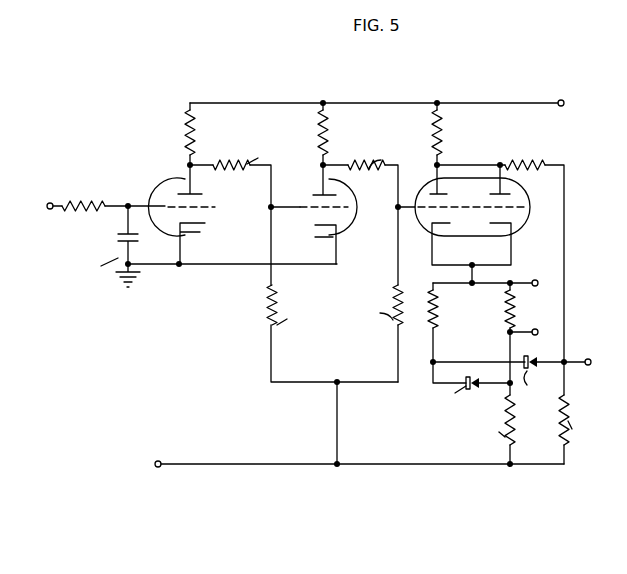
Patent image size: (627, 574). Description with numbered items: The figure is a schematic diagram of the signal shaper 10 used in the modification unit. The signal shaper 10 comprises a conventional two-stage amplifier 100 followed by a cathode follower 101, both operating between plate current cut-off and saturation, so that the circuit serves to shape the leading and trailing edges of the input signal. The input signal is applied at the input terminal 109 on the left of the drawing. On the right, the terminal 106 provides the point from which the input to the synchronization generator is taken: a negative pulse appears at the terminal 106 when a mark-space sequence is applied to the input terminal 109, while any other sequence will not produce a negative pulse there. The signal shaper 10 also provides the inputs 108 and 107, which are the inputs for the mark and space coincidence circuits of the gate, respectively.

The signal shaper 10 is at (152, 75).
The two-stage amplifier 100 is at (160, 98).
The cathode follower 101 is at (419, 226).
The terminal 106 is at (544, 285).
The input 107 is at (589, 359).
The input 108 is at (543, 325).
The input terminal 109 is at (50, 203).